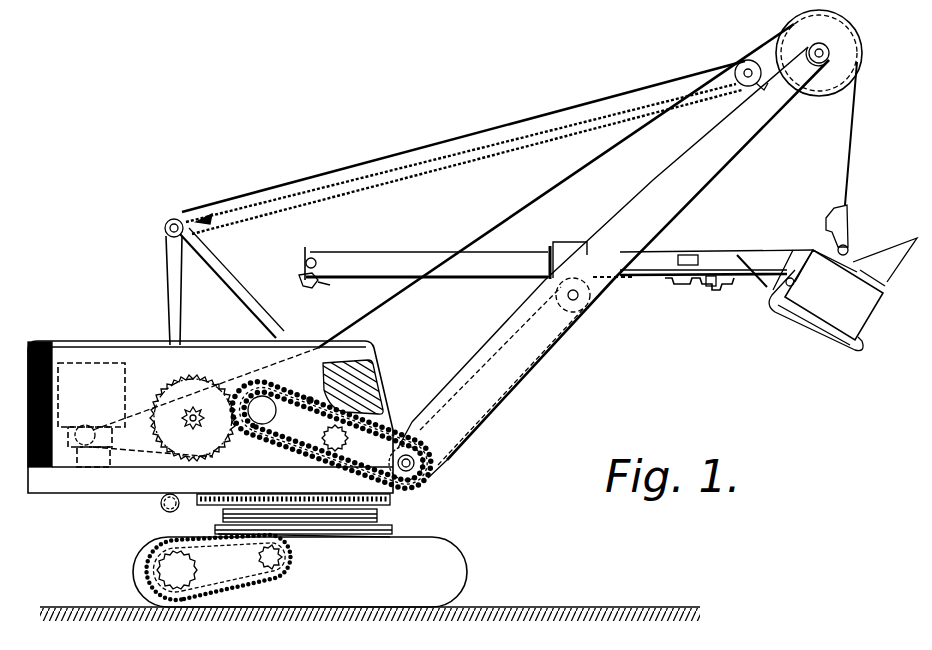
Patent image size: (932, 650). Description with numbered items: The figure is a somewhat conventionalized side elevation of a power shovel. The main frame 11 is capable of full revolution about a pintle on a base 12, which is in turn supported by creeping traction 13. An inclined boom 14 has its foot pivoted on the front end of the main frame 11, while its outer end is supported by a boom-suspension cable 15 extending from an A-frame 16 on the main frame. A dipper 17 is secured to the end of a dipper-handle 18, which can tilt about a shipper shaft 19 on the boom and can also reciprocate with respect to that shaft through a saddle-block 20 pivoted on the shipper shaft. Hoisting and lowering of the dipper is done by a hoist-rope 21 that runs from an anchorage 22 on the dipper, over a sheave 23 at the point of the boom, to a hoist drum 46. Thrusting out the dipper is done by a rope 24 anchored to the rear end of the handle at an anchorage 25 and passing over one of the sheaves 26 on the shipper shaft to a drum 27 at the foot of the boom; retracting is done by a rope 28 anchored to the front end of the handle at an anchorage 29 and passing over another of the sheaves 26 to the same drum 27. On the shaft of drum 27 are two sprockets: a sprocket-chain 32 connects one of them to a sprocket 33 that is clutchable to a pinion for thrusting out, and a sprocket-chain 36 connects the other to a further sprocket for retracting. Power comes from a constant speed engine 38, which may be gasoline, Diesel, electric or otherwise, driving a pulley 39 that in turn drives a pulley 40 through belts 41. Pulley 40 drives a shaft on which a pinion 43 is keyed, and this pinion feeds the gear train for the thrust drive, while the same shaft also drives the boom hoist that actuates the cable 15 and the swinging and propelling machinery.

The main frame 11 is at (80, 482).
The base 12 is at (392, 518).
The creeping traction 13 is at (467, 560).
The inclined boom 14 is at (664, 188).
The boom-suspension cable 15 is at (317, 175).
The A-frame 16 is at (172, 300).
The dipper 17 is at (877, 313).
The dipper-handle 18 is at (712, 258).
The shipper shaft 19 is at (570, 295).
The saddle-block 20 is at (586, 220).
The hoist-rope 21 is at (853, 138).
The anchorage 22 is at (848, 249).
The sheave 23 is at (861, 53).
The rope 24 is at (432, 278).
The anchorage of thrust rope 25 is at (297, 282).
The sheaves 26 is at (583, 307).
The drum 27 is at (422, 482).
The rope 28 is at (653, 279).
The anchorage of retract rope 29 is at (713, 281).
The sprocket-chain 32 is at (352, 451).
The sprocket 33 is at (337, 440).
The sprocket-chain 36 is at (310, 400).
The constant speed engine 38 is at (70, 380).
The pulley 39 is at (85, 437).
The pulley 40 is at (181, 394).
The belts 41 is at (137, 395).
The pinion 43 is at (192, 419).
The hoist drum 46 is at (266, 412).